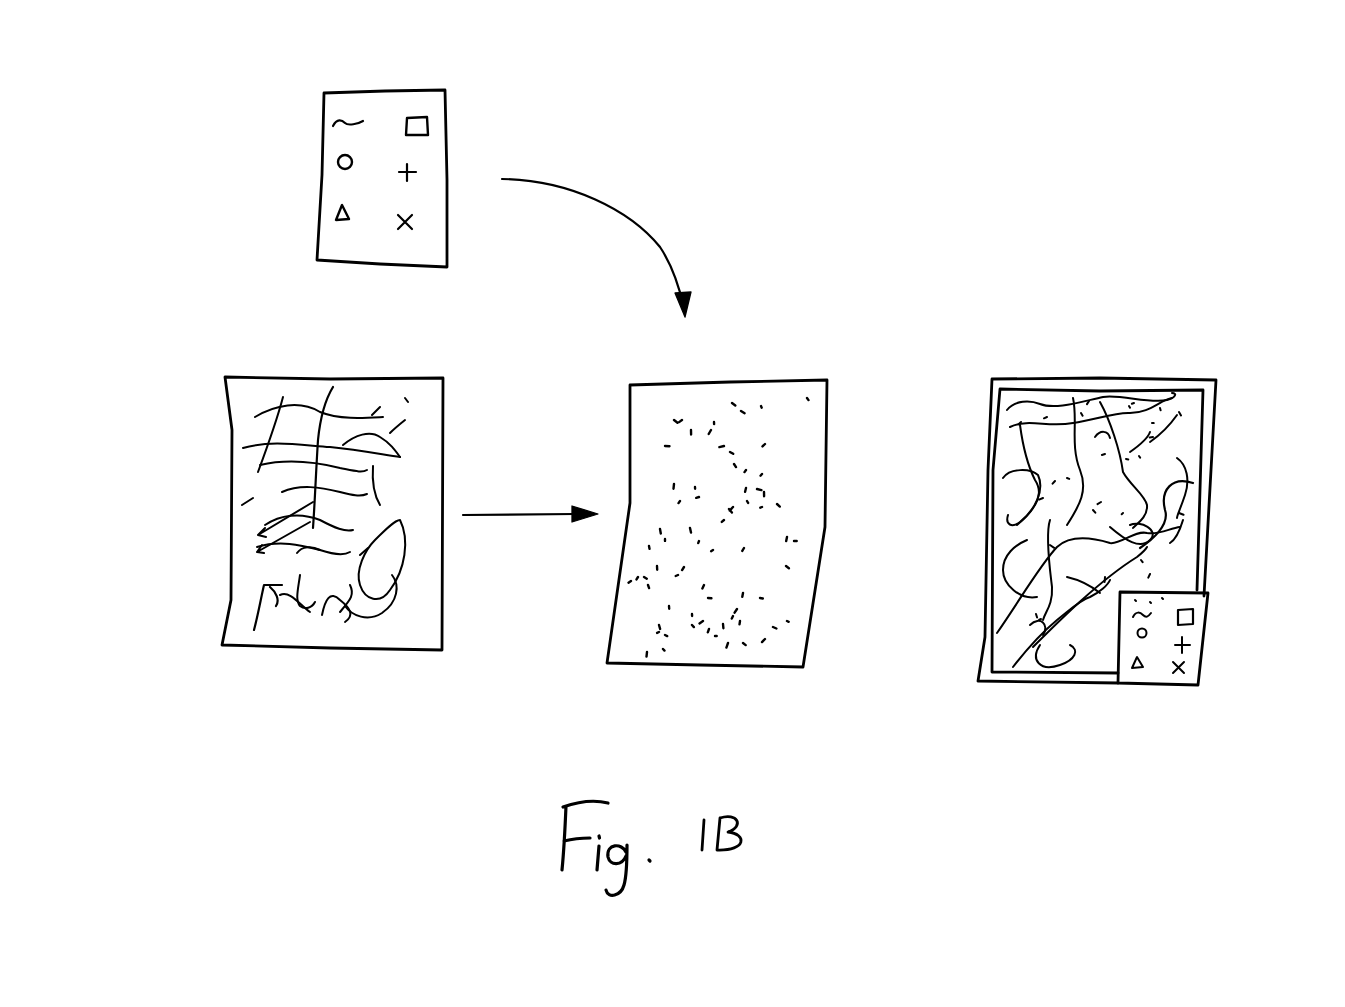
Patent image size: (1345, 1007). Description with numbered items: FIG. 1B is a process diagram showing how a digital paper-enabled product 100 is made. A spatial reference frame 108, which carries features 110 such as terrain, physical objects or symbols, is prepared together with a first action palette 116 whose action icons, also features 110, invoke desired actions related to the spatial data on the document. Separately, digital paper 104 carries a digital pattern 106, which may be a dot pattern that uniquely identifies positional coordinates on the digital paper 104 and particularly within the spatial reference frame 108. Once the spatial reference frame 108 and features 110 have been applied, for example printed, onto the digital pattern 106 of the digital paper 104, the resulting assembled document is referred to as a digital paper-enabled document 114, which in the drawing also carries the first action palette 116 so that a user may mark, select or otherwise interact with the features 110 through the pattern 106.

The digital paper-enabled product 100 is at (1027, 176).
The digital paper 104 is at (825, 452).
The digital pattern 106 is at (762, 517).
The spatial reference frame 108 is at (232, 445).
The feature 110 is at (428, 132).
The digital paper-enabled document 114 is at (1127, 323).
The first action palette 116 is at (416, 66).